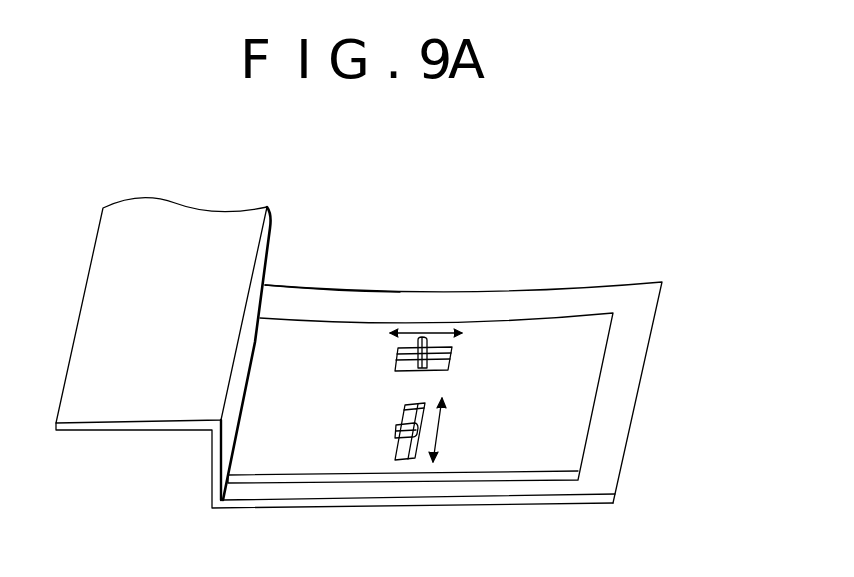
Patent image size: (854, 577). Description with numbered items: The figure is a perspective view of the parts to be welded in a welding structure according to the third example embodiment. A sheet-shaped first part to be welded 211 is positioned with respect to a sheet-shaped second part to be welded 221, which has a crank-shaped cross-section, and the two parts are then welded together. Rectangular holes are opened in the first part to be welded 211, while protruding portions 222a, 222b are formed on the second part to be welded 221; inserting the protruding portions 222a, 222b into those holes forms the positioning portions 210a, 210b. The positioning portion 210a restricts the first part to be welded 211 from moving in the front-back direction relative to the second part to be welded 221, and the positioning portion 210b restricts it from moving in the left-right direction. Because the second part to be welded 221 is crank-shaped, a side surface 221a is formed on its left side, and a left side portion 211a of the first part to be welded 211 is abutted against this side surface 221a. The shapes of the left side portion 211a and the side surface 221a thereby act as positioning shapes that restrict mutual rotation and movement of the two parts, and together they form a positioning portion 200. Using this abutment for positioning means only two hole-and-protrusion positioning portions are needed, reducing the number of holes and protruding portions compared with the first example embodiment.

The positioning portion 200 is at (363, 392).
The first part to be welded 211 is at (302, 433).
The left side portion 211a is at (250, 378).
The second part to be welded 221 is at (612, 432).
The side surface 221a is at (255, 284).
The protruding portion 222a is at (433, 360).
The protruding portion 222b is at (397, 432).
The positioning portion 210a is at (467, 358).
The positioning portion 210b is at (458, 412).